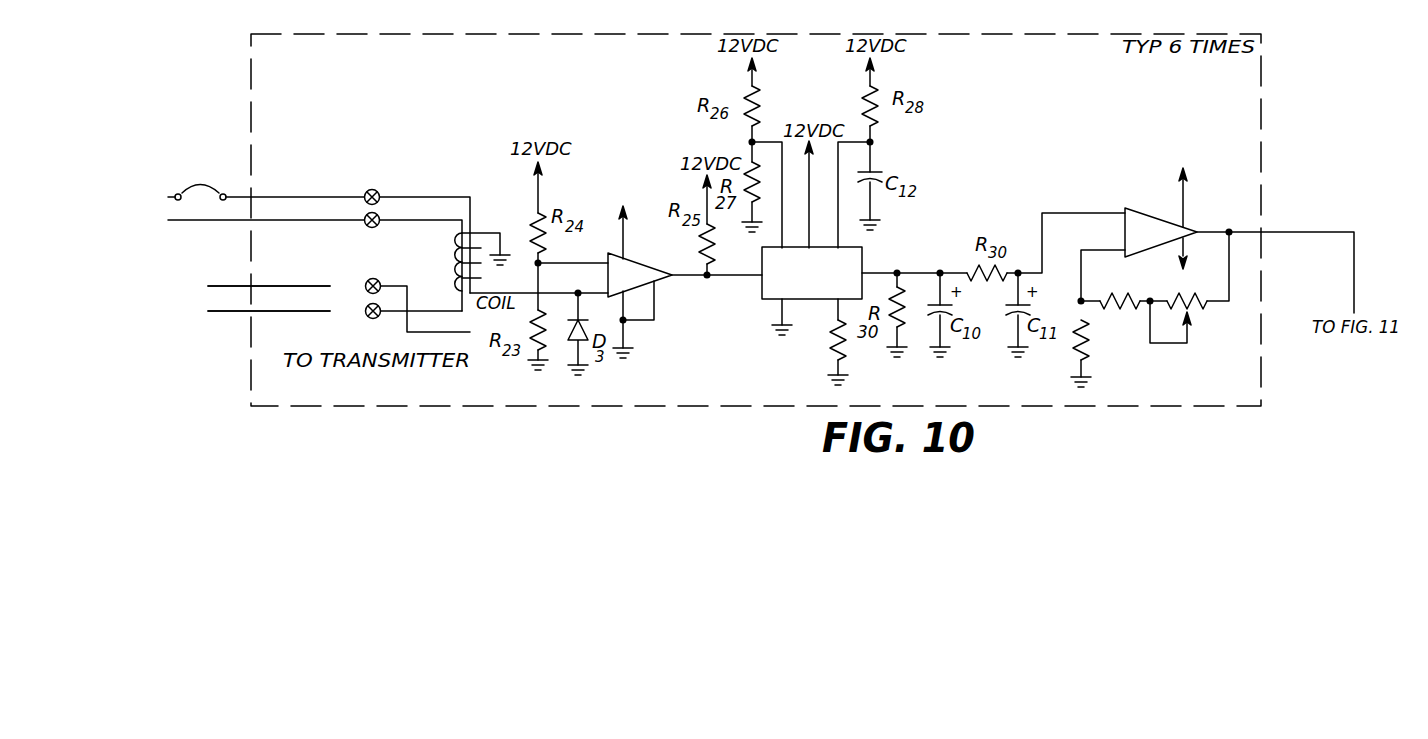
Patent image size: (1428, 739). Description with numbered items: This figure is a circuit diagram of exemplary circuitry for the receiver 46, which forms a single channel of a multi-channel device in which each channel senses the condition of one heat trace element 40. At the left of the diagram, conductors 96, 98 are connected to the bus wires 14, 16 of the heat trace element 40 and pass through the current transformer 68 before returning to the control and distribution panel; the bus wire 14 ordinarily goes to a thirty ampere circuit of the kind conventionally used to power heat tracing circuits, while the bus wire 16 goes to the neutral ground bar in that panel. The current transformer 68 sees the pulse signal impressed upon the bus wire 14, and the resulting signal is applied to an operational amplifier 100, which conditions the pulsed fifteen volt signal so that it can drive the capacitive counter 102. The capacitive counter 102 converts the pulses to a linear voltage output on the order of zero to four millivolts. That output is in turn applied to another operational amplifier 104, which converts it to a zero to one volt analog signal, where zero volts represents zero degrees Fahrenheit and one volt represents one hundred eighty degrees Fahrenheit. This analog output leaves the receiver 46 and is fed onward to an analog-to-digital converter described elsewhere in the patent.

The receiver 46 is at (431, 409).
The conductor 96 is at (423, 197).
The conductor 98 is at (420, 222).
The bus wire 14 is at (238, 286).
The heat trace element 40 is at (238, 286).
The bus wire 16 is at (228, 312).
The current transformer 68 is at (456, 250).
The operational amplifier 100 is at (665, 252).
The capacitive counter 102 is at (760, 299).
The operational amplifier 104 is at (1130, 207).